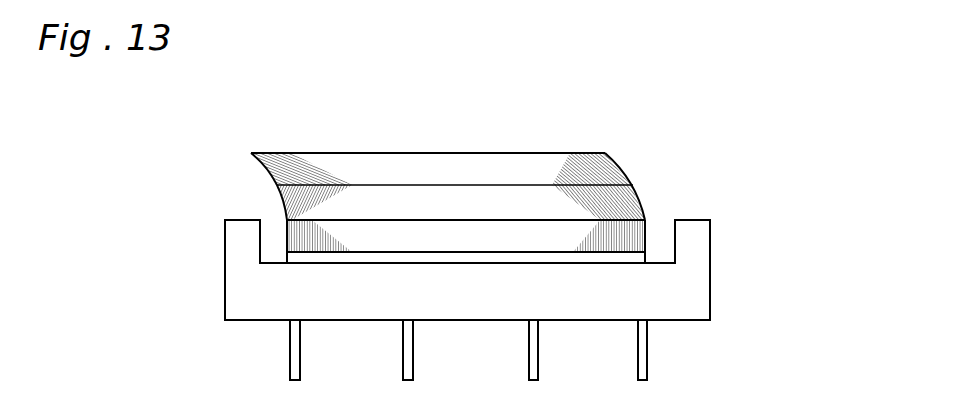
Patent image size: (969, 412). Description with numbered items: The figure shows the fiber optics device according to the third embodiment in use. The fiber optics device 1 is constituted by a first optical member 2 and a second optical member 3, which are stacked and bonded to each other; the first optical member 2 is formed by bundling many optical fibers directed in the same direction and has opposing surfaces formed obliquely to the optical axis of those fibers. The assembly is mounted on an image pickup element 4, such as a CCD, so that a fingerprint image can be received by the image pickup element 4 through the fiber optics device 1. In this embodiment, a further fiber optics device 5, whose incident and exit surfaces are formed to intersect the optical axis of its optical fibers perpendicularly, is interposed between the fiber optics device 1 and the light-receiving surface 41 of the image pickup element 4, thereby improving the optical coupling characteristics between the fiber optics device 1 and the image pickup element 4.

The fiber optics device 1 is at (650, 136).
The first optical member 2 is at (341, 162).
The second optical member 3 is at (425, 205).
The image pickup element 4 is at (712, 272).
The light-receiving surface 41 is at (581, 254).
The fiber optics device 5 is at (646, 232).